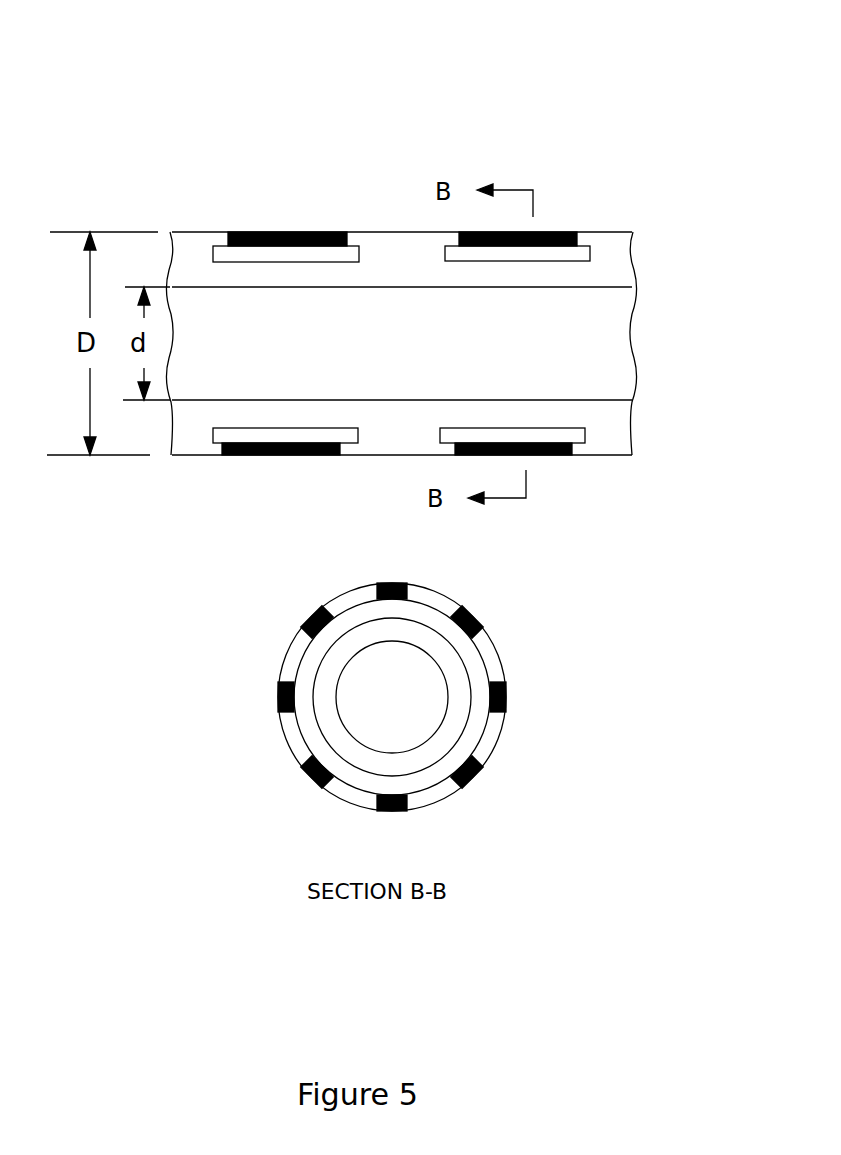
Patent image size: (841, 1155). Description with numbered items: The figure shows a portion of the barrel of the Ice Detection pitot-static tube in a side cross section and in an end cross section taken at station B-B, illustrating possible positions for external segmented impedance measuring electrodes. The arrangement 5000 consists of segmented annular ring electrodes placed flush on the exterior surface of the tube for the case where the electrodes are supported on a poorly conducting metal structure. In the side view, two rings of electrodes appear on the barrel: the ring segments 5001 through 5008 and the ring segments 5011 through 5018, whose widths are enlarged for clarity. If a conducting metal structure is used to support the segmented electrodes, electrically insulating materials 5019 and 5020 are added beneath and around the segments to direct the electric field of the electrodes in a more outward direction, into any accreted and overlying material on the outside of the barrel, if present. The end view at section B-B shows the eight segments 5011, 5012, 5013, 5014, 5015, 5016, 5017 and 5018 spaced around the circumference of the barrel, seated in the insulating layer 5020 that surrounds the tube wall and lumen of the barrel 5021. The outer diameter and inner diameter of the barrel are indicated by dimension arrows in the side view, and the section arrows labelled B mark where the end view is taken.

The segmented annular ring electrode arrangement 5000 is at (228, 63).
The ring segment 5001 is at (292, 232).
The ring segment 5008 is at (397, 449).
The ring segment 5011 is at (567, 233).
The ring segment 5012 is at (472, 620).
The ring segment 5013 is at (506, 684).
The ring segment 5014 is at (483, 765).
The ring segment 5015 is at (390, 811).
The ring segment 5016 is at (313, 780).
The ring segment 5017 is at (283, 697).
The ring segment 5018 is at (312, 612).
The electrically insulating material 5019 is at (323, 250).
The electrically insulating material 5020 is at (590, 232).
The tube wall 5021 is at (610, 273).